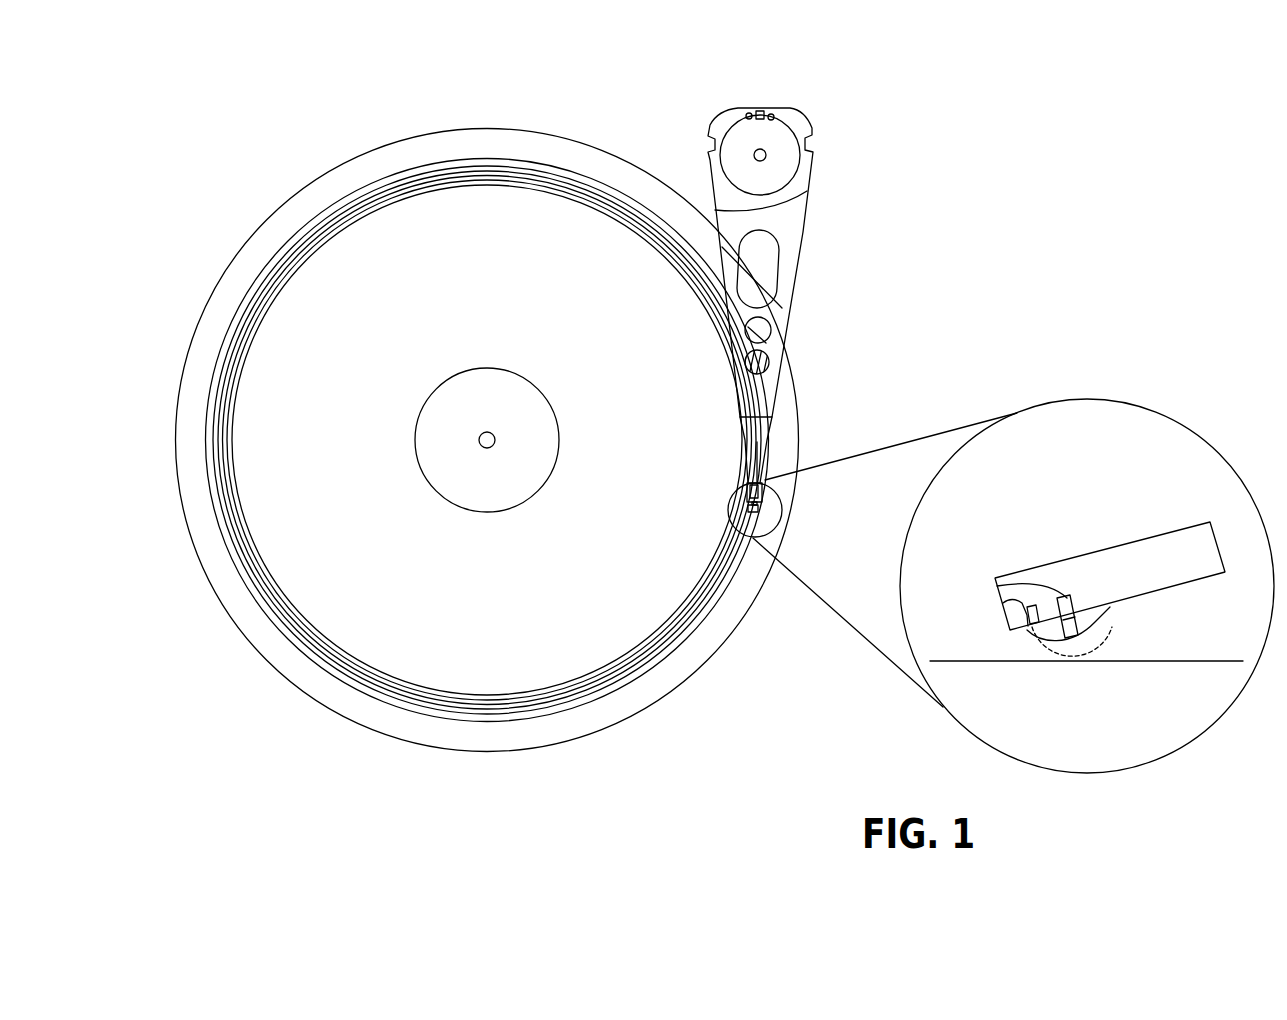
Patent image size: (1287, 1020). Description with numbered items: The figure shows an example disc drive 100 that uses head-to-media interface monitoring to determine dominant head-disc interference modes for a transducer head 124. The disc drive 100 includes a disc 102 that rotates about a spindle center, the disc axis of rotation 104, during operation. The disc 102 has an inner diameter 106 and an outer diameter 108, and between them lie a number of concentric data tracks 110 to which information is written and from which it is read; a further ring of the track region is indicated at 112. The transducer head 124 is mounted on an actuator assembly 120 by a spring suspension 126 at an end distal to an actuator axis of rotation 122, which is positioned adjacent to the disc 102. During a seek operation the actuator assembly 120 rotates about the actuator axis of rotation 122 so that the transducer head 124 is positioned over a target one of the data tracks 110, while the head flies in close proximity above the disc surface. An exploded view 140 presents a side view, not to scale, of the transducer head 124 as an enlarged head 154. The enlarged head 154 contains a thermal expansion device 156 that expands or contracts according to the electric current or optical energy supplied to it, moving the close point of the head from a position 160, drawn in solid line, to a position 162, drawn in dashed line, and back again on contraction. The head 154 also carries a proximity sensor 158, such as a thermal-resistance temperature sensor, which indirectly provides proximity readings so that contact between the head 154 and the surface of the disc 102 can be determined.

The disc drive 100 is at (243, 105).
The disc 102 is at (560, 138).
The disc axis of rotation 104 is at (457, 373).
The inner diameter 106 is at (480, 437).
The outer diameter 108 is at (375, 178).
The data tracks 110 is at (245, 589).
The outer track 112 is at (327, 660).
The actuator assembly 120 is at (805, 232).
The actuator axis of rotation 122 is at (772, 149).
The transducer head 124 is at (757, 506).
The spring suspension 126 is at (745, 442).
The exploded view 140 is at (1095, 773).
The enlarged head 154 is at (1150, 596).
The thermal expansion device 156 is at (997, 586).
The proximity sensor 158 is at (1000, 602).
The position 160 is at (1110, 607).
The position 162 is at (1050, 654).